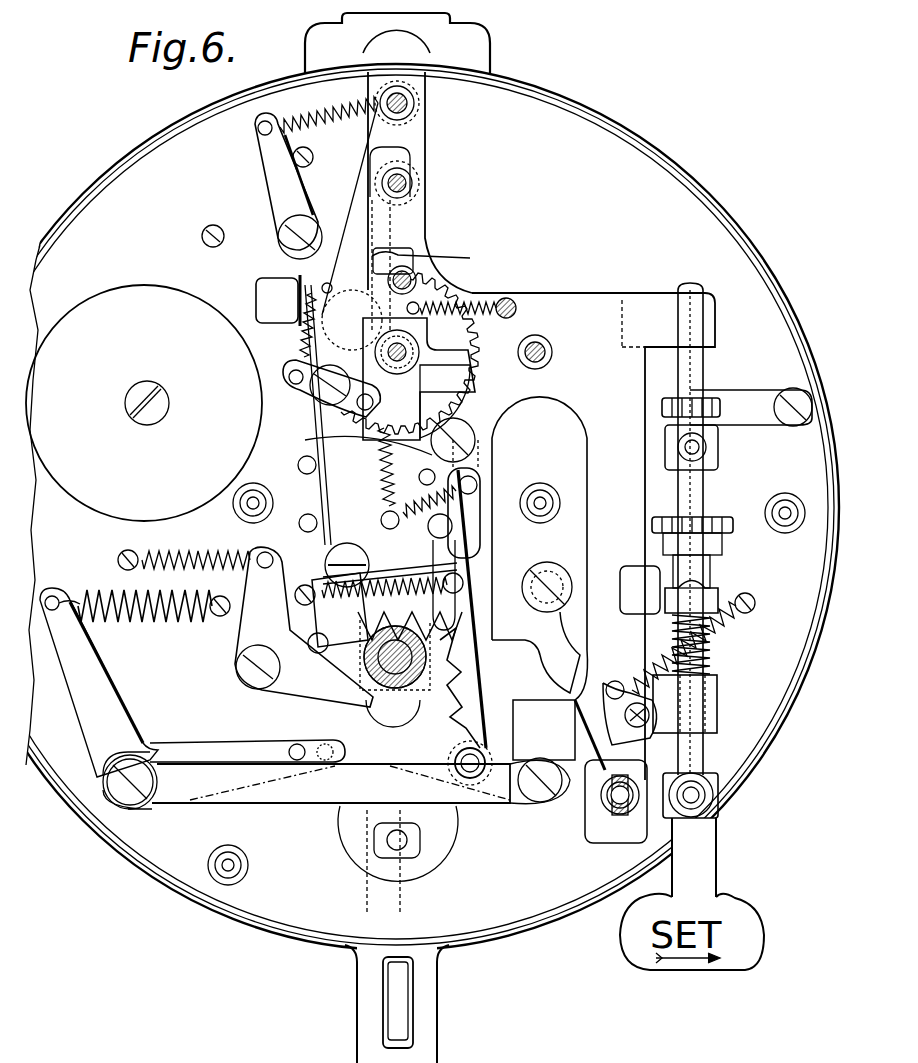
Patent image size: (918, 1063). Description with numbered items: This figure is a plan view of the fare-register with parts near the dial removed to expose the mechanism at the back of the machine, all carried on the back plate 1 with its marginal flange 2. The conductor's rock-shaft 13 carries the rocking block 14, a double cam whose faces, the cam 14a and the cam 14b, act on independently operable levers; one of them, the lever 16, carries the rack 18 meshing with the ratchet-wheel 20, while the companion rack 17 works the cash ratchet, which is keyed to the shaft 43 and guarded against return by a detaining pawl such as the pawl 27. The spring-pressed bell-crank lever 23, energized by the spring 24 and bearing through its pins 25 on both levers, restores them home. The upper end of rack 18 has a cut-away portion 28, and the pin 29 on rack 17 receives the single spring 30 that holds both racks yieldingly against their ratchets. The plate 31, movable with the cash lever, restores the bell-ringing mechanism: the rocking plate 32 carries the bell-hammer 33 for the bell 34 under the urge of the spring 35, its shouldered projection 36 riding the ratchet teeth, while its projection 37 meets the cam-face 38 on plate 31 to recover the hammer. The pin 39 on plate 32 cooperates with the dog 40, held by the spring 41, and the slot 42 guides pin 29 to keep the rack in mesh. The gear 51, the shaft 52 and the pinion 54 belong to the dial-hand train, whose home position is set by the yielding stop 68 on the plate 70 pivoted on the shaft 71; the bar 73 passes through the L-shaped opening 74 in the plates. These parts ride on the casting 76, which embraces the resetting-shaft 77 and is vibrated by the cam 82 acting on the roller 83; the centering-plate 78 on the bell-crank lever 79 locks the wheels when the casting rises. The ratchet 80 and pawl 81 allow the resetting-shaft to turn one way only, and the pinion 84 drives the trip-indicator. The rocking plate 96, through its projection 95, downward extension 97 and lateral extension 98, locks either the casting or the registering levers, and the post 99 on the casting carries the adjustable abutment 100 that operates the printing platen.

The back plate 1 is at (503, 516).
The marginal flange 2 is at (693, 182).
The rock-shaft 13 is at (392, 845).
The rocking block 14 is at (398, 848).
The cam 14a is at (460, 808).
The cam 14b is at (358, 808).
The lever 16 is at (336, 775).
The rack 17 is at (470, 565).
The rack 18 is at (468, 700).
The ratchet-wheel 20 is at (392, 706).
The bell-crank lever 23 is at (104, 700).
The spring 24 is at (145, 622).
The pins 25 is at (322, 745).
The pawl 27 is at (304, 627).
The cut-away portion 28 is at (462, 606).
The pin 29 is at (463, 582).
The spring 30 is at (395, 573).
The plate 31 is at (539, 532).
The rocking plate 32 is at (325, 415).
The bell-hammer 33 is at (278, 300).
The bell 34 is at (144, 403).
The spring 35 is at (355, 452).
The shouldered projection 36 is at (340, 610).
The projection 37 is at (318, 630).
The cam-face 38 is at (328, 650).
The pin 39 is at (418, 478).
The dog 40 is at (472, 510).
The spring 41 is at (402, 505).
The slot 42 is at (452, 528).
The shaft 43 is at (410, 630).
The gear 51 is at (470, 358).
The shaft 52 is at (439, 369).
The pinion 54 is at (445, 401).
The yielding stop 68 is at (331, 388).
The laterally-movable plate 70 is at (408, 212).
The shaft 71 is at (410, 103).
The bar 73 is at (420, 280).
The L-shaped opening 74 is at (380, 263).
The casting 76 is at (594, 536).
The resetting-shaft 77 is at (692, 372).
The centering-plate 78 is at (395, 255).
The bell-crank lever 79 is at (316, 178).
The ratchet 80 is at (678, 398).
The pawl 81 is at (751, 407).
The cam 82 is at (710, 590).
The roller 83 is at (660, 590).
The pinion 84 is at (700, 523).
The projection 95 is at (625, 715).
The rocking plate 96 is at (564, 656).
The downward extension 97 is at (585, 749).
The lateral extension 98 is at (544, 730).
The post 99 is at (610, 800).
The adjustable abutment 100 is at (612, 812).